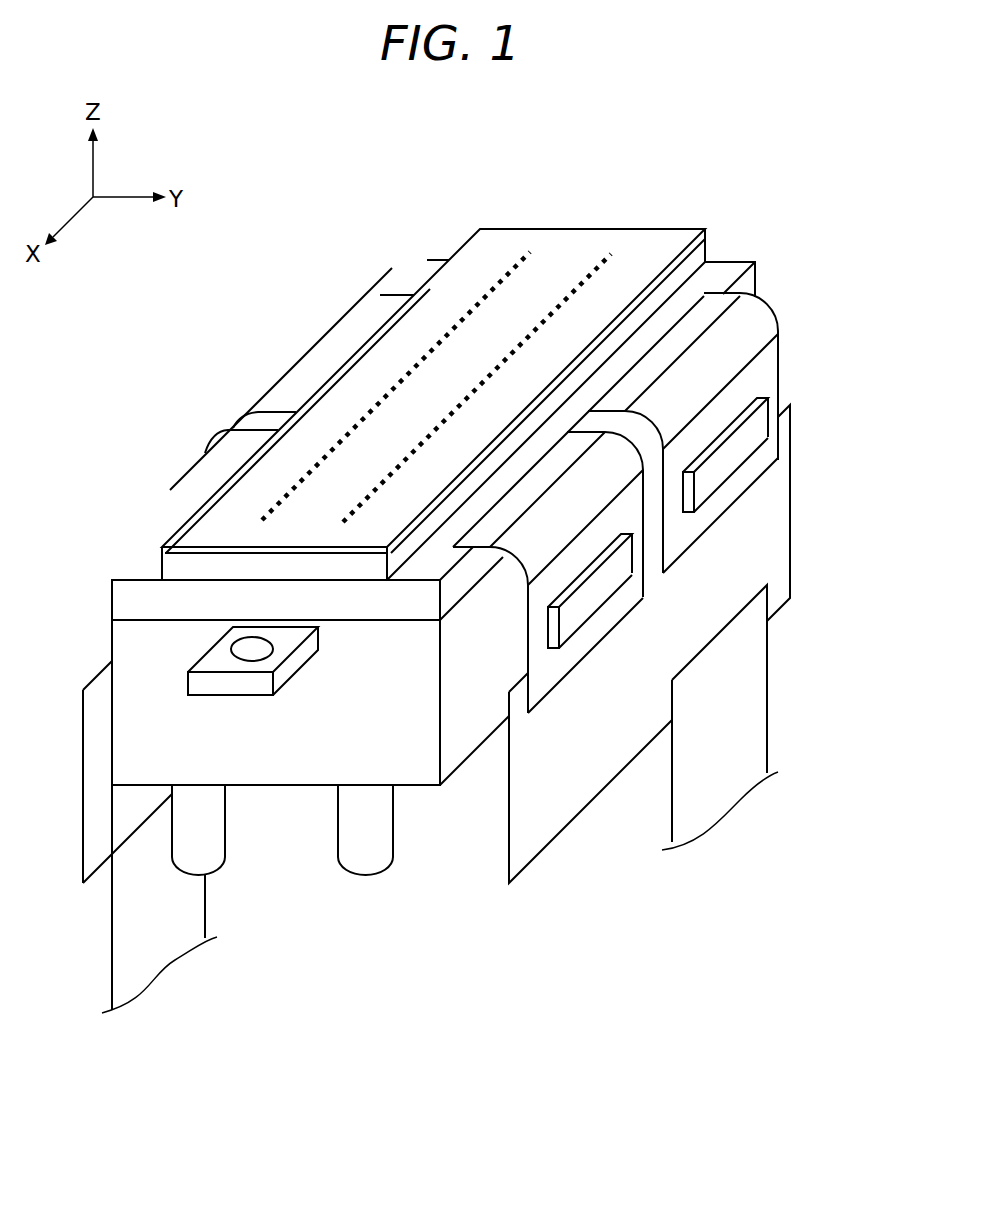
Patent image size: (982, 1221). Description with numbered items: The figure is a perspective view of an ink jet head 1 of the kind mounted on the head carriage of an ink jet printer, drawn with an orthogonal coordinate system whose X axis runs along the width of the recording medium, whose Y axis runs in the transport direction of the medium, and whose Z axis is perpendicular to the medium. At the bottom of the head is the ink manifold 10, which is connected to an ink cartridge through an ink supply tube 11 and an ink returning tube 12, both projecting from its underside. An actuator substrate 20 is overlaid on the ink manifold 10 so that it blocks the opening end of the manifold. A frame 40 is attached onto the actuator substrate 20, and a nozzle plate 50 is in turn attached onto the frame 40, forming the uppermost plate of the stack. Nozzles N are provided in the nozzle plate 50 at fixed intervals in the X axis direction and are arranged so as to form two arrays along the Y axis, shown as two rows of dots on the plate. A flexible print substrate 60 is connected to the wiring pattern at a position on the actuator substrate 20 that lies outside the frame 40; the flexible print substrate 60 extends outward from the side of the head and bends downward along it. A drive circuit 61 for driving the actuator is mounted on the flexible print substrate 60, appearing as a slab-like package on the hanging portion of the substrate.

The ink jet head 1 is at (564, 129).
The ink manifold 10 is at (127, 735).
The ink supply tube 11 is at (210, 833).
The ink returning tube 12 is at (375, 833).
The actuator substrate 20 is at (127, 600).
The frame 40 is at (177, 570).
The nozzle plate 50 is at (469, 256).
The flexible print substrate 60 is at (278, 397).
The drive circuit 61 is at (758, 427).
The nozzles N is at (433, 343).